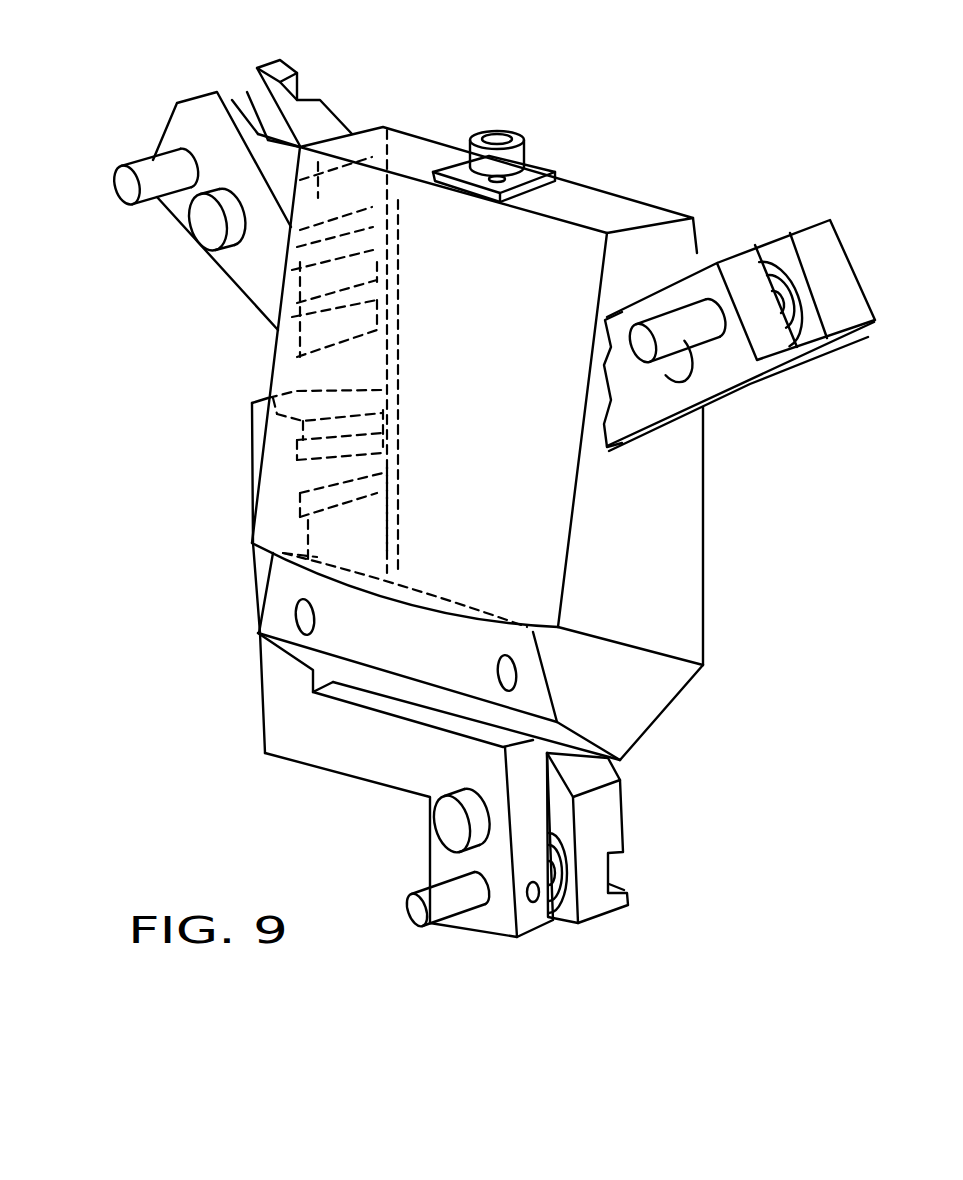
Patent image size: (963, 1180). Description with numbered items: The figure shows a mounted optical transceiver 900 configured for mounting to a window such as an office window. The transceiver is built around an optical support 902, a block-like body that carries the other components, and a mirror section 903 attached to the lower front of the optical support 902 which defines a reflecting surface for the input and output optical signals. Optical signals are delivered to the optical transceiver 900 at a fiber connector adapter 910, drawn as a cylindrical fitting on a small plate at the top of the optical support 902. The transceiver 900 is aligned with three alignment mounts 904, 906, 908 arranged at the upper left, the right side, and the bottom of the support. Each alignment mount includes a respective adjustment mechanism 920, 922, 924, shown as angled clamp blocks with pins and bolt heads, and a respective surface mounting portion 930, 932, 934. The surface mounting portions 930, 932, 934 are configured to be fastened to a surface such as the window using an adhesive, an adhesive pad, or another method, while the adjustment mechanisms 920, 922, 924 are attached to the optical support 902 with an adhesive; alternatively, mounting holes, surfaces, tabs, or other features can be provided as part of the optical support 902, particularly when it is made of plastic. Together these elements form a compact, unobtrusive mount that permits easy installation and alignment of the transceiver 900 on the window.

The mounted optical transceiver 900 is at (708, 133).
The optical support 902 is at (313, 373).
The mirror section 903 is at (340, 642).
The alignment mount 904 is at (266, 43).
The alignment mount 906 is at (800, 292).
The alignment mount 908 is at (333, 745).
The fiber connector adapter 910 is at (497, 140).
The adjustment mechanism 920 is at (170, 128).
The adjustment mechanism 922 is at (697, 343).
The adjustment mechanism 924 is at (498, 917).
The surface mounting portion 930 is at (280, 63).
The surface mounting portion 932 is at (810, 237).
The surface mounting portion 934 is at (608, 828).